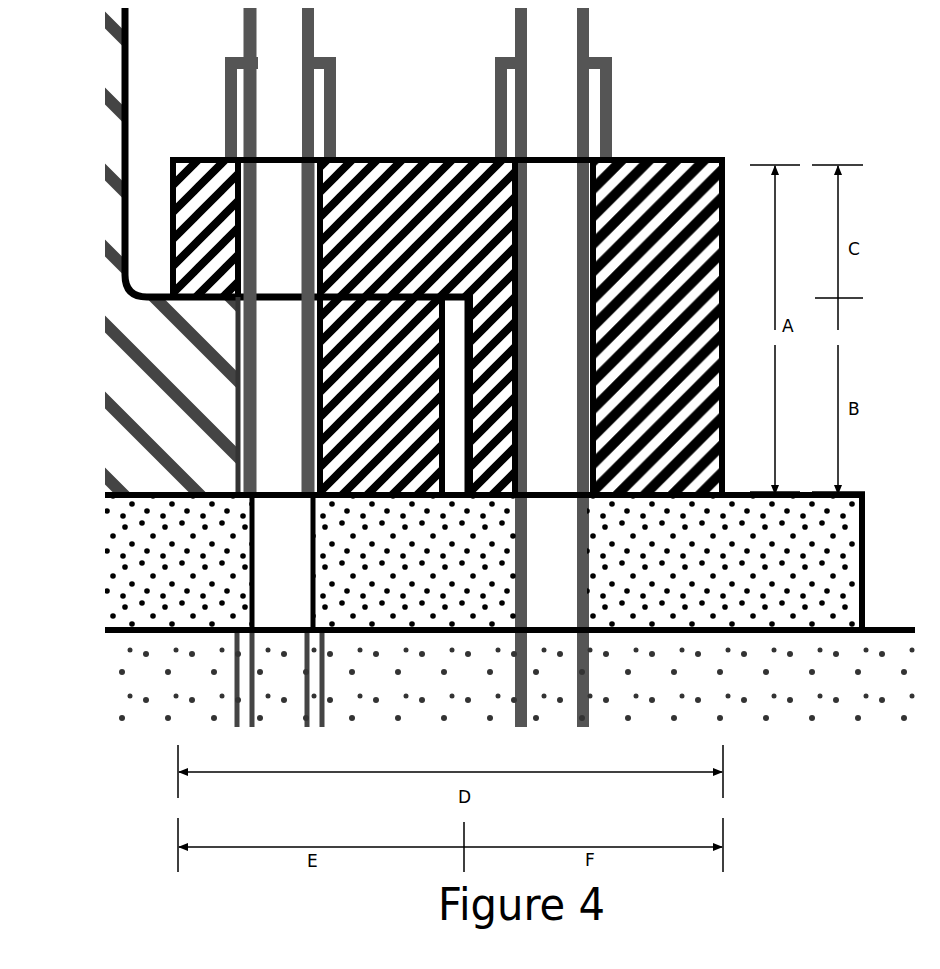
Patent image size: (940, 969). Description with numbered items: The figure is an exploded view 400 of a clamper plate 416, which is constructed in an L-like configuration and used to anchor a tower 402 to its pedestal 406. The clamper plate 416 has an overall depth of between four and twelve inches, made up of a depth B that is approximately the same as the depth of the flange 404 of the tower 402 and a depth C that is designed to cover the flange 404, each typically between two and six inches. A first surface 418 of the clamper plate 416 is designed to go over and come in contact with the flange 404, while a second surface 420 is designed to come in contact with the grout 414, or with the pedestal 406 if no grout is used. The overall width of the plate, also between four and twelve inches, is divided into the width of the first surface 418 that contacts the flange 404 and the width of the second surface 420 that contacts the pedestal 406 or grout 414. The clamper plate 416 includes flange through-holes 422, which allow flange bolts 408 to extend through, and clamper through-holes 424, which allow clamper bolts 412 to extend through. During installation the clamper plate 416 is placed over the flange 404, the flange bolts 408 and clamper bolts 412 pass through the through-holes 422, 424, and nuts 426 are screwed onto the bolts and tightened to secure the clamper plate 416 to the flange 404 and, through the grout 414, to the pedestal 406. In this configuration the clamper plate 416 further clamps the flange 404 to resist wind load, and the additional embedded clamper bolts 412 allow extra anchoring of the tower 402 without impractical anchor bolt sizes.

The exploded view 400 is at (88, 789).
The tower 402 is at (128, 44).
The flange 404 is at (416, 500).
The pedestal 406 is at (915, 630).
The flange bolts 408 is at (308, 22).
The clamper bolts 412 is at (588, 22).
The grout 414 is at (862, 517).
The clamper plate 416 is at (722, 160).
The first surface 418 is at (360, 297).
The second surface 420 is at (678, 500).
The flange through-holes 422 is at (237, 175).
The clamper through-holes 424 is at (497, 172).
The nuts 426 is at (331, 75).